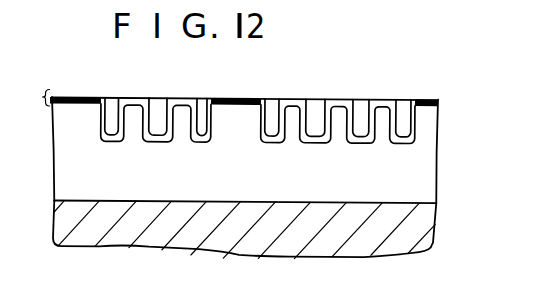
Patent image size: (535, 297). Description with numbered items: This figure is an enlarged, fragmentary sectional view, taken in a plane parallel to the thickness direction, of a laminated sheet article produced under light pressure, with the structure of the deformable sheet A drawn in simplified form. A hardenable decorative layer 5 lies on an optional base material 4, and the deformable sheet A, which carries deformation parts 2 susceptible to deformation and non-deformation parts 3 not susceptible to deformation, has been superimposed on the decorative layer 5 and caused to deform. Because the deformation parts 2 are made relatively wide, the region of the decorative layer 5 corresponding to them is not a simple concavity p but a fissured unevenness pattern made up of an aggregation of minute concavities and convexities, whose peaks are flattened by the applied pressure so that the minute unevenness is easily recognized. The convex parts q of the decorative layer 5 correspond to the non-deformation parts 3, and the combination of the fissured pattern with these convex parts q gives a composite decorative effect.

The deformable sheet A is at (64, 100).
The deformation part 2 is at (135, 97).
The convexity q is at (232, 97).
The concavity p is at (402, 96).
The non-deformation part 3 is at (417, 98).
The decorative layer 5 is at (438, 150).
The base material 4 is at (436, 226).